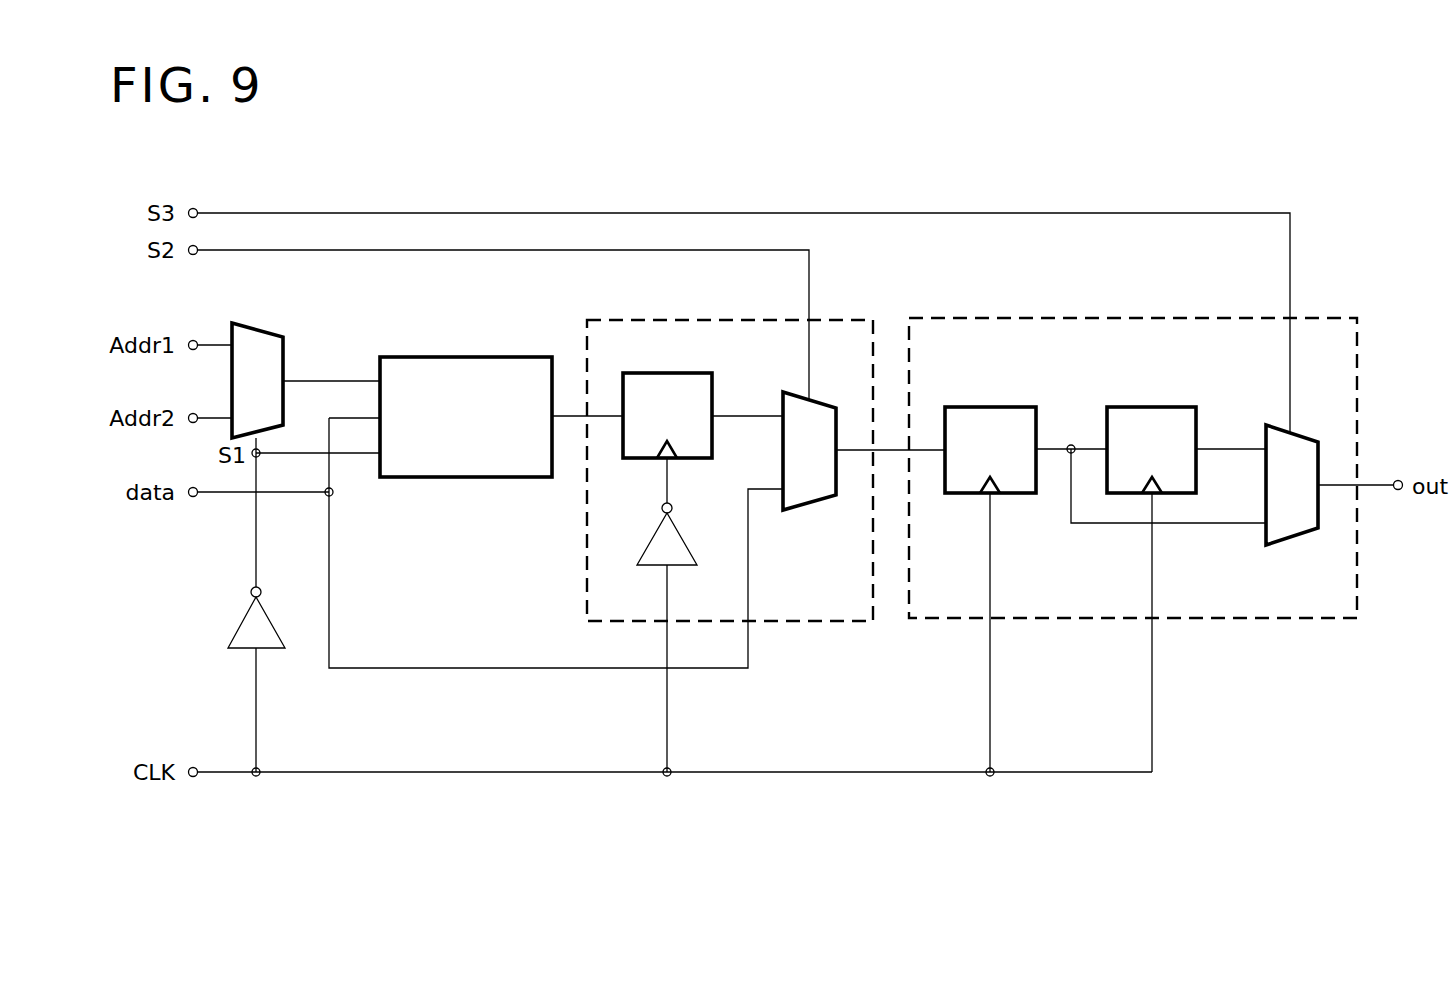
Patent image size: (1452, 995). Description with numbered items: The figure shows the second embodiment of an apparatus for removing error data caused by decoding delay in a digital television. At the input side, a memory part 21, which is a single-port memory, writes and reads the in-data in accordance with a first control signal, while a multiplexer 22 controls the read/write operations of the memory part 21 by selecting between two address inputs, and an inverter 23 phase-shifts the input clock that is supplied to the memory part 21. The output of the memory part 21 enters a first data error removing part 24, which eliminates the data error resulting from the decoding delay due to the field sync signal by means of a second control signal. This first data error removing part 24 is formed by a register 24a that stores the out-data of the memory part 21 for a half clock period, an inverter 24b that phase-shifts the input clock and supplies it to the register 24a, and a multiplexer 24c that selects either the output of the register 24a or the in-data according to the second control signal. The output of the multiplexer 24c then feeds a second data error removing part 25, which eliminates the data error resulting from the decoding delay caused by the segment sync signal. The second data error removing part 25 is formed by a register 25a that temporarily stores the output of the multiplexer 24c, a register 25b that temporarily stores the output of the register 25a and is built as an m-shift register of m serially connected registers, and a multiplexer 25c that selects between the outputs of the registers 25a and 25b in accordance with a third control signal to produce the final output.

The memory part 21 is at (468, 357).
The multiplexer 22 is at (260, 323).
The inverter 23 is at (242, 620).
The first data error removing part 24 is at (752, 320).
The register 24a is at (668, 373).
The inverter 24b is at (683, 535).
The multiplexer 24c is at (812, 506).
The second data error removing part 25 is at (1133, 318).
The register 25a is at (990, 407).
The register 25b is at (1152, 407).
The multiplexer 25c is at (1297, 542).